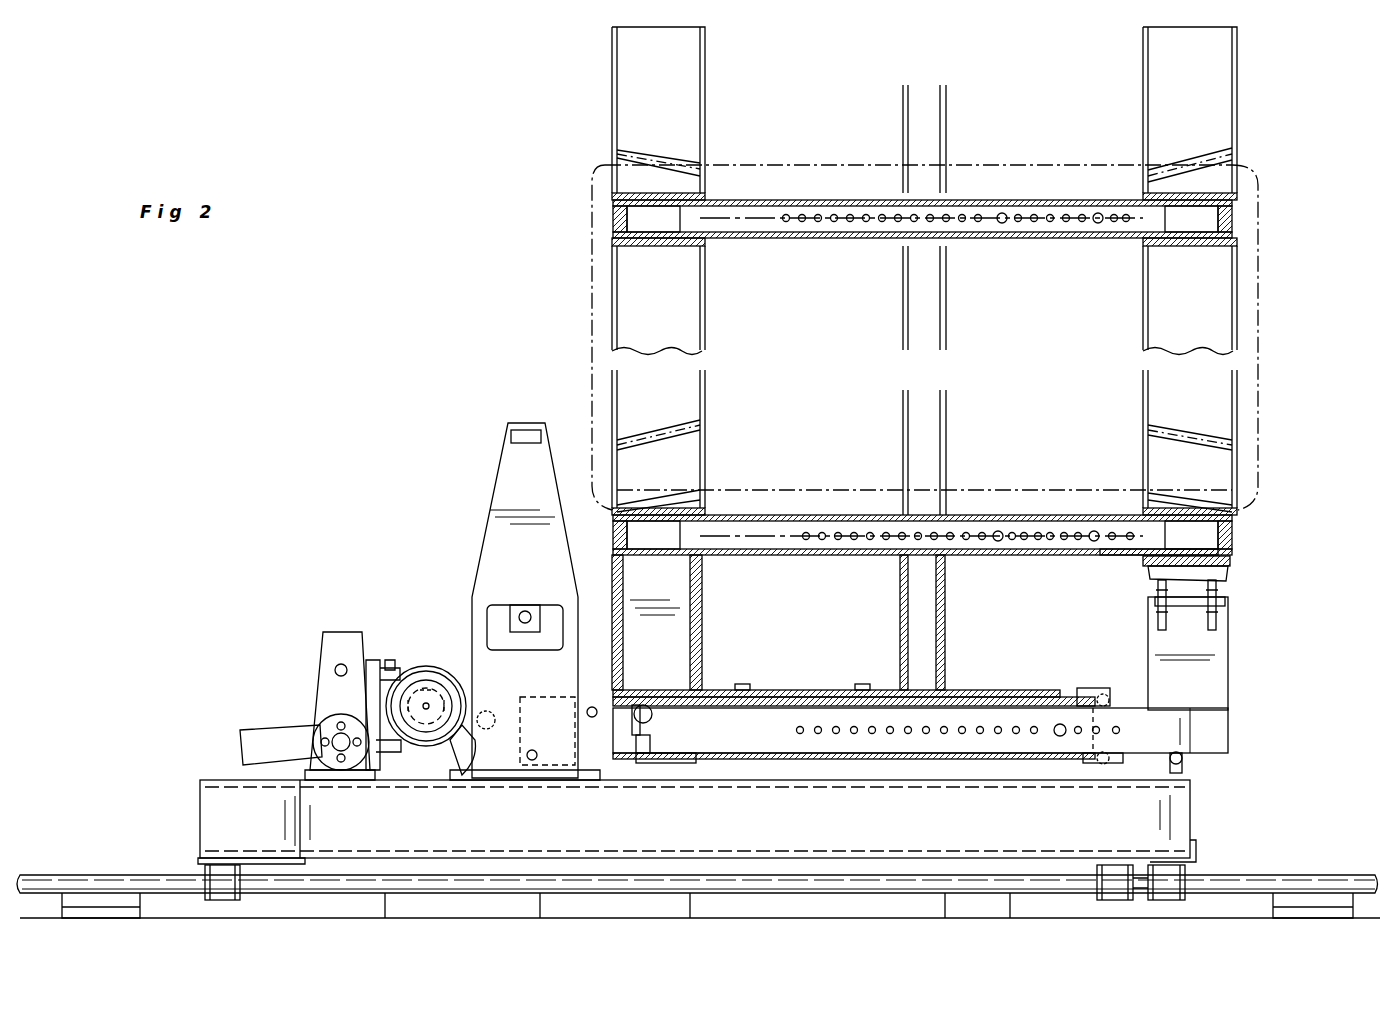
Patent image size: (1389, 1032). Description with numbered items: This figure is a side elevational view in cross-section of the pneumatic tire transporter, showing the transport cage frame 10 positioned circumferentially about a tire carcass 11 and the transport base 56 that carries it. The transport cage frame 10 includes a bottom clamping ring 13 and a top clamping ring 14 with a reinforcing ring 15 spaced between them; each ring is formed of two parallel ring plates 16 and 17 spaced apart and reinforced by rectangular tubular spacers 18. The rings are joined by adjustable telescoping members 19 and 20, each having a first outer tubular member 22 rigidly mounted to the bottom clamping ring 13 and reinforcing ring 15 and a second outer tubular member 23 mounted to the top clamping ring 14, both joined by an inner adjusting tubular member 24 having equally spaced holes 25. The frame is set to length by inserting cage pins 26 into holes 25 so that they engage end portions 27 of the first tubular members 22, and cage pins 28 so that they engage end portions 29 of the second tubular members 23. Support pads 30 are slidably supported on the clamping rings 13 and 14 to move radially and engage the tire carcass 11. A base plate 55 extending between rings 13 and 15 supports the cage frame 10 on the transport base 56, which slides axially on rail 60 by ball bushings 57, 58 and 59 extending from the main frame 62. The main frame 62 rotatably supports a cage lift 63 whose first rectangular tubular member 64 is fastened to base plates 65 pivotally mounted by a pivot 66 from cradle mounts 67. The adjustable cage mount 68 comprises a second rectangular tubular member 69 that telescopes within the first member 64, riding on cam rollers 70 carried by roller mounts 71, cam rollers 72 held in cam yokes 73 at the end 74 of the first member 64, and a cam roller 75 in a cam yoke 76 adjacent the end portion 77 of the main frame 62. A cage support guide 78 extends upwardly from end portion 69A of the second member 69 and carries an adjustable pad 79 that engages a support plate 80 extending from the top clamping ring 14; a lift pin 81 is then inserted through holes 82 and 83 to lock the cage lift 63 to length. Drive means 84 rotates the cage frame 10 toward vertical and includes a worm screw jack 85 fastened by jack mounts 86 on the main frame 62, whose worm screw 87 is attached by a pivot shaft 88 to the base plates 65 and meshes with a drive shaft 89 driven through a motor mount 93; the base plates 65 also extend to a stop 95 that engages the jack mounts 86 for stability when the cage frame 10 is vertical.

The transport cage frame 10 is at (598, 92).
The tire carcass 11 is at (1010, 158).
The bottom clamping ring 13 is at (712, 100).
The top clamping ring 14 is at (1248, 100).
The reinforcing ring 15 is at (960, 108).
The ring plate 16 is at (903, 312).
The ring plate 17 is at (705, 314).
The rectangular tubular spacer 18 is at (636, 195).
The adjustable telescoping member 19 is at (1036, 558).
The adjustable telescoping member 20 is at (1070, 246).
The first outer tubular member 22 is at (786, 200).
The second outer tubular member 23 is at (1132, 238).
The inner adjusting tubular member 24 is at (1045, 200).
The holes 25 is at (882, 222).
The cage pin 26 is at (1005, 224).
The end portion 27 is at (1010, 200).
The cage pin 28 is at (1095, 212).
The end portion 29 is at (1118, 556).
The support pad 30 is at (614, 260).
The base plate 55 is at (775, 690).
The transport base 56 is at (1205, 812).
The ball bushing 57 is at (1180, 885).
The ball bushing 58 is at (1100, 885).
The ball bushing 59 is at (215, 880).
The rail 60 is at (440, 878).
The main frame 62 is at (697, 822).
The cage lift 63 is at (712, 685).
The first rectangular tubular member 64 is at (847, 697).
The base plates 65 is at (562, 555).
The pivot 66 is at (524, 610).
The cradle mount 67 is at (525, 644).
The adjustable cage mount 68 is at (1222, 664).
The second rectangular tubular member 69 is at (959, 734).
The end portion 69A is at (1228, 740).
The cam roller 70 is at (643, 705).
The roller mount 71 is at (648, 758).
The cam roller 72 is at (1105, 700).
The cam yoke 73 is at (1093, 765).
The end 74 is at (1077, 688).
The cam roller 75 is at (1185, 760).
The cam yoke 76 is at (1182, 770).
The end portion 77 is at (1175, 820).
The cage support guide 78 is at (1162, 640).
The adjustable plate or pad 79 is at (1225, 600).
The support plate 80 is at (1228, 575).
The lift pin 81 is at (1058, 738).
The holes 82 is at (1055, 738).
The holes 83 is at (965, 725).
The drive means 84 is at (436, 662).
The worm screw jack 85 is at (432, 775).
The jack mount 86 is at (322, 652).
The worm screw 87 is at (466, 770).
The pivot shaft 88 is at (495, 725).
The drive shaft 89 is at (410, 765).
The motor mount 93 is at (380, 660).
The stop 95 is at (525, 430).